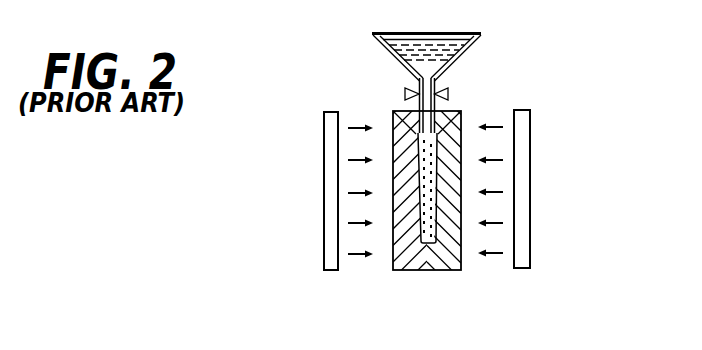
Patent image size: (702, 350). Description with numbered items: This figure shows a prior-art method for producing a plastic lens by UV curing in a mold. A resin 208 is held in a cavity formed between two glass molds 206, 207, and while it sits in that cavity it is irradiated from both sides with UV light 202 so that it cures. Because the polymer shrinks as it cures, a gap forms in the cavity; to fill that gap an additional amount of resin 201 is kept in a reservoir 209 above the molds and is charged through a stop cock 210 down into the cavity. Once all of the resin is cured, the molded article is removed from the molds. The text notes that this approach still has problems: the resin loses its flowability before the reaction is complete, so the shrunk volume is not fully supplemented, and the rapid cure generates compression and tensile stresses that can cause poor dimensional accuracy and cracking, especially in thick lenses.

The additional amount of resin 201 is at (433, 50).
The UV light 202 is at (327, 158).
The glass mold 206 is at (463, 112).
The glass mold 207 is at (399, 112).
The resin 208 is at (416, 139).
The reservoir 209 is at (477, 37).
The stop cock 210 is at (445, 91).